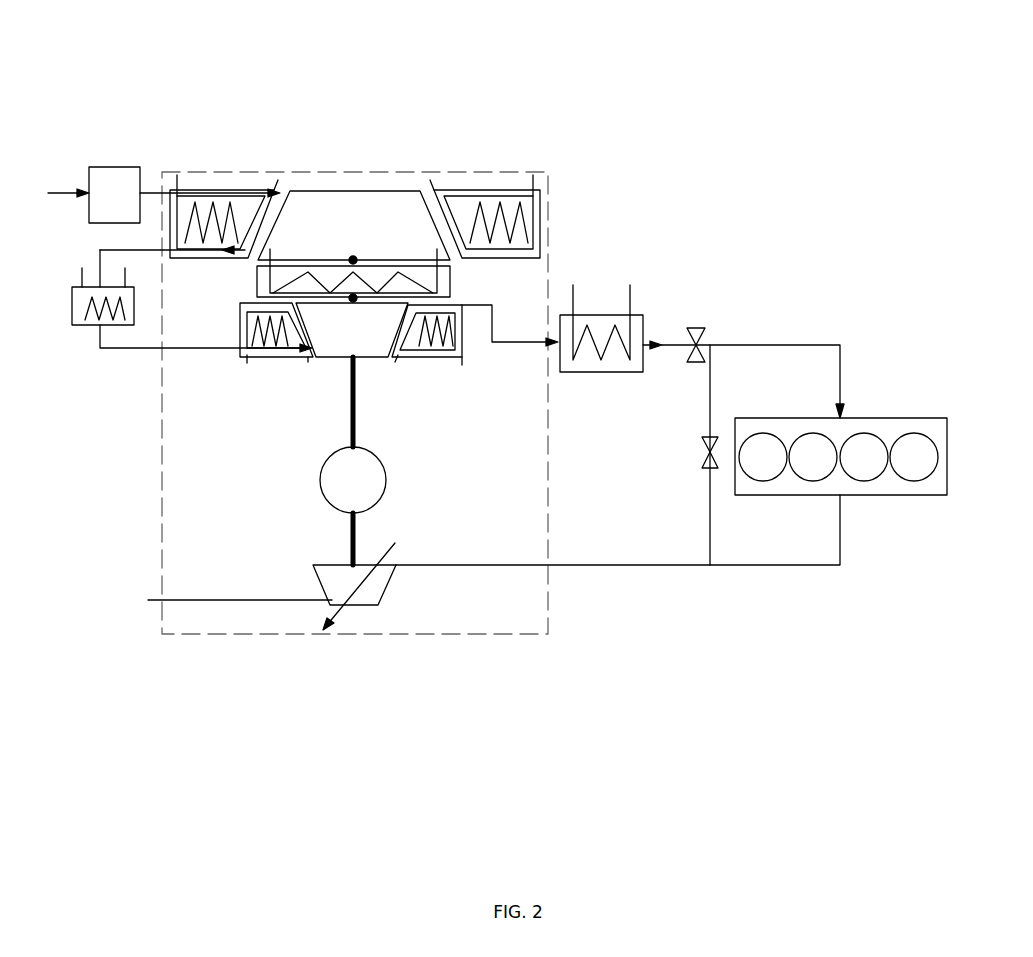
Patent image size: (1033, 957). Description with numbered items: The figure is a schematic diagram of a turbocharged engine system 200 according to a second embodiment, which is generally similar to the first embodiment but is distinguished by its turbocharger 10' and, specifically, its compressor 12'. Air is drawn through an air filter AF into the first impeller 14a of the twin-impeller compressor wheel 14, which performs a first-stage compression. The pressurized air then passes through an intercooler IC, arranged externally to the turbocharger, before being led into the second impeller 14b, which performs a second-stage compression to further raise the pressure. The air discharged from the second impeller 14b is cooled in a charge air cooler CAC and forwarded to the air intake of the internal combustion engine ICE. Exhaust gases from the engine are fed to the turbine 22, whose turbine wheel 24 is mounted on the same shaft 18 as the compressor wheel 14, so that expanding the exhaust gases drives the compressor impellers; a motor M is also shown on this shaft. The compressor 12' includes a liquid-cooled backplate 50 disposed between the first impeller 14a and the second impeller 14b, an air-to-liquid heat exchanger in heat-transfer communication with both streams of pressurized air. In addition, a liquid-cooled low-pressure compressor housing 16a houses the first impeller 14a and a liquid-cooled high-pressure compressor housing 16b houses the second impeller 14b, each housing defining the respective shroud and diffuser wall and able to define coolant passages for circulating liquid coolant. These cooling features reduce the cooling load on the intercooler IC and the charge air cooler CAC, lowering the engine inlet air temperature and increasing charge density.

The turbocharged engine system 200 is at (608, 146).
The turbocharger 10' is at (366, 362).
The compressor wheel 14 is at (401, 264).
The first impeller 14a is at (392, 190).
The second impeller 14b is at (330, 357).
The liquid-cooled low-pressure compressor housing 16a is at (538, 222).
The liquid-cooled high-pressure compressor housing 16b is at (242, 330).
The liquid-cooled backplate 50 is at (445, 278).
The shaft 18 is at (356, 430).
The compressor 12' is at (433, 373).
The turbine 22 is at (311, 605).
The turbine wheel 24 is at (362, 600).
The air filter AF is at (110, 171).
The intercooler IC is at (75, 303).
The charge air cooler CAC is at (602, 372).
The internal combustion engine ICE is at (907, 418).
The motor M is at (327, 483).